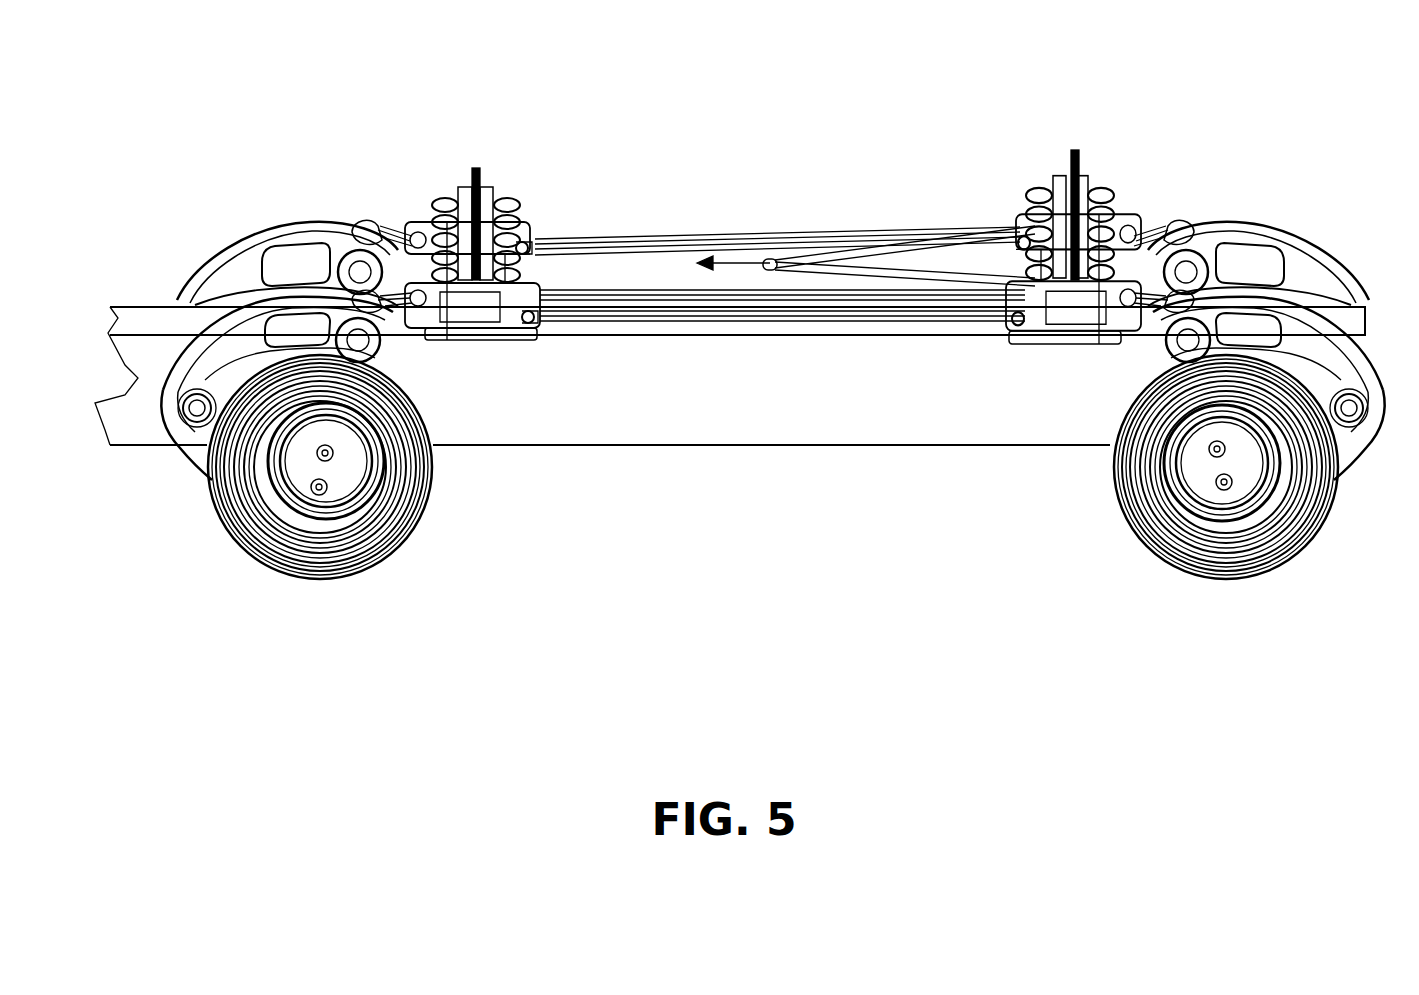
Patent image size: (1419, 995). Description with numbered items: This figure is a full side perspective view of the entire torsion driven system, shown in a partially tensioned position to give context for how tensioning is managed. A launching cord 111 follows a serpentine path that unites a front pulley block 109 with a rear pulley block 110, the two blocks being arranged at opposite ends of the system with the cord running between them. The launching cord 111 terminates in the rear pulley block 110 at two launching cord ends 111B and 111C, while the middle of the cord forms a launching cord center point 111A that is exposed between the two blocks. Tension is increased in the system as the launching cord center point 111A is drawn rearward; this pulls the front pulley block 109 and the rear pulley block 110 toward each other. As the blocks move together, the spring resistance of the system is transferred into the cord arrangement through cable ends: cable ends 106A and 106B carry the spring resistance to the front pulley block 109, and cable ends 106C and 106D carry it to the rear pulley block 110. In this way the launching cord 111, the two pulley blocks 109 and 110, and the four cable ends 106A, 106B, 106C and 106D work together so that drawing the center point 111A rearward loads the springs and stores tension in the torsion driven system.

The cable end 106A is at (1148, 320).
The cable end 106B is at (1155, 222).
The cable end 106C is at (400, 225).
The cable end 106D is at (400, 302).
The front pulley block 109 is at (1083, 157).
The rear pulley block 110 is at (483, 167).
The launching cord 111 is at (641, 240).
The launching cord center point 111A is at (773, 258).
The launching cord end 111B is at (547, 250).
The launching cord end 111C is at (542, 320).